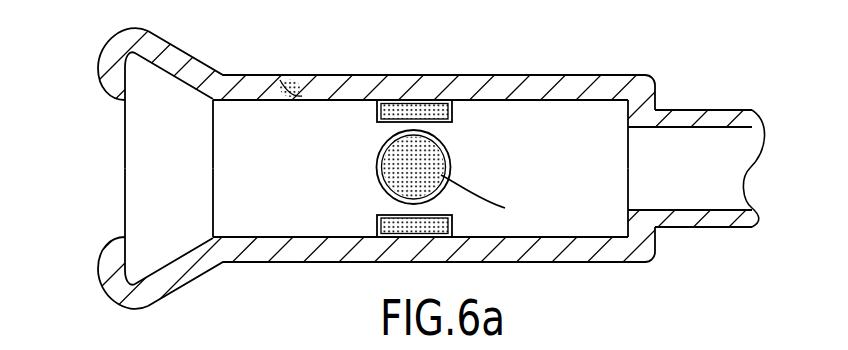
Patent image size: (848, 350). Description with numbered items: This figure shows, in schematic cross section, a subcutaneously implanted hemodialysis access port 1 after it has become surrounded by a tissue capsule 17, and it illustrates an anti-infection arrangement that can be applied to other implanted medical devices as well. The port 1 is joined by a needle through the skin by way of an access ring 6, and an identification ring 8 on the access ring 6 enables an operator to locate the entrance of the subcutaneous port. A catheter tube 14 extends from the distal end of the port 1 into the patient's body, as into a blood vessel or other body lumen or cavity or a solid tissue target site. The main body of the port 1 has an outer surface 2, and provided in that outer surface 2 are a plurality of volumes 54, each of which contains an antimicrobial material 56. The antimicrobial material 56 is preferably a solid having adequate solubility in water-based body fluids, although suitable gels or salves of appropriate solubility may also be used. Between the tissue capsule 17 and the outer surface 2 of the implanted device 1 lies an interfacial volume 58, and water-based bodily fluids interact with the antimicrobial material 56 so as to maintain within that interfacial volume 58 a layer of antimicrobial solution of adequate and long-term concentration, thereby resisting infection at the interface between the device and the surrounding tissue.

The access port 1 is at (462, 40).
The outer surface 2 is at (568, 102).
The access ring 6 is at (177, 176).
The identification ring 8 is at (130, 52).
The catheter tube 14 is at (704, 178).
The tissue capsule 17 is at (545, 75).
The volumes 54 is at (378, 223).
The antimicrobial material 56 is at (452, 112).
The interfacial volume 58 is at (290, 81).